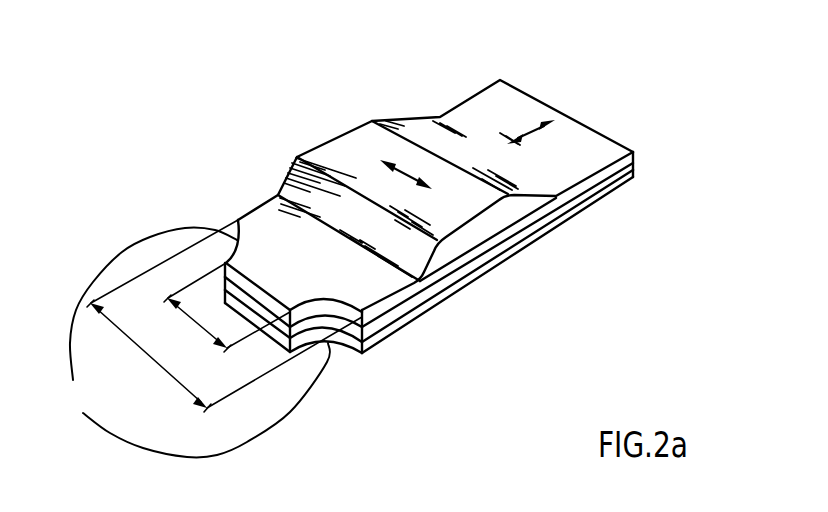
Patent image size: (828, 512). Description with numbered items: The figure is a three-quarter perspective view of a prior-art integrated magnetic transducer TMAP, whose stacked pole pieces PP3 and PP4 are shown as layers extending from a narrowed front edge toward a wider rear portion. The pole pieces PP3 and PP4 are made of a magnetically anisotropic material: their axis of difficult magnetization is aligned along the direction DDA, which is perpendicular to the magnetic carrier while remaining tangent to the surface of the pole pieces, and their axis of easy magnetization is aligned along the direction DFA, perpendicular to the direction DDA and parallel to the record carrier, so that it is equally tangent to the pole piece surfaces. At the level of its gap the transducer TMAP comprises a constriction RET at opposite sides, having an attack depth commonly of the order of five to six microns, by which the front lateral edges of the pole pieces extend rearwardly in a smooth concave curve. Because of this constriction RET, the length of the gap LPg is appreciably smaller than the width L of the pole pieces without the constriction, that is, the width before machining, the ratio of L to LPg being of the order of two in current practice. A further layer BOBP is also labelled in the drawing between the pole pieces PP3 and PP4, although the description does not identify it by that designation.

The pole piece PP4 is at (361, 123).
The pole piece PP3 is at (602, 196).
The intermediate layer BOBP is at (470, 263).
The transducer TMAP is at (332, 386).
The constriction RET is at (196, 343).
The direction of difficult magnetization DDA is at (544, 137).
The direction of easy magnetization DFA is at (417, 188).
The width of the pole pieces L is at (224, 316).
The length of the gap LPg is at (227, 307).